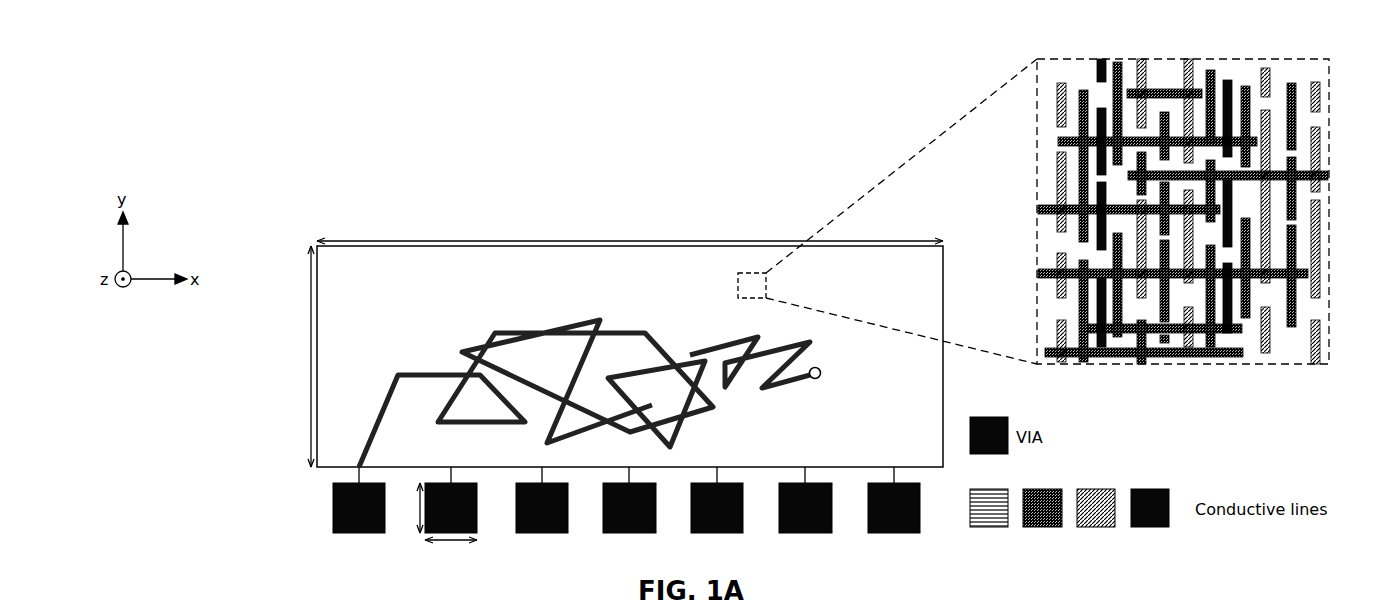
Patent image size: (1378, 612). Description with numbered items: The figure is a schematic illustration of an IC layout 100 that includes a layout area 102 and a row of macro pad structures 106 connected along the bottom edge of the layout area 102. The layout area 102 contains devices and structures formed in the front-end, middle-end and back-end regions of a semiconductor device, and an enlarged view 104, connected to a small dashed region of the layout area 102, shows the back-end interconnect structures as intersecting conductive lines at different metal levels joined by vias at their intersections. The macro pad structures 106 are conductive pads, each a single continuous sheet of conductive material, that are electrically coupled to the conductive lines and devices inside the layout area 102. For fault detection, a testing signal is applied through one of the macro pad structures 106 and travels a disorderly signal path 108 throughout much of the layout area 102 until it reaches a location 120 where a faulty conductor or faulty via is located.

The IC layout 100 is at (239, 147).
The layout area 102 is at (428, 262).
The enlarged view 104 is at (1165, 58).
The macro pad structures 106 is at (335, 512).
The signal path 108 is at (415, 373).
The location 120 is at (820, 377).